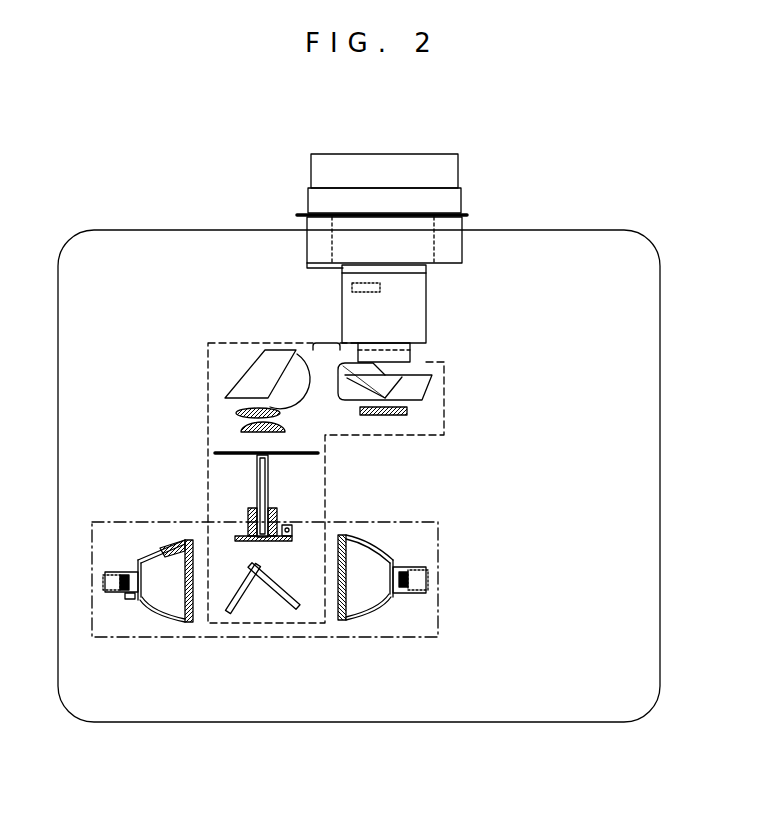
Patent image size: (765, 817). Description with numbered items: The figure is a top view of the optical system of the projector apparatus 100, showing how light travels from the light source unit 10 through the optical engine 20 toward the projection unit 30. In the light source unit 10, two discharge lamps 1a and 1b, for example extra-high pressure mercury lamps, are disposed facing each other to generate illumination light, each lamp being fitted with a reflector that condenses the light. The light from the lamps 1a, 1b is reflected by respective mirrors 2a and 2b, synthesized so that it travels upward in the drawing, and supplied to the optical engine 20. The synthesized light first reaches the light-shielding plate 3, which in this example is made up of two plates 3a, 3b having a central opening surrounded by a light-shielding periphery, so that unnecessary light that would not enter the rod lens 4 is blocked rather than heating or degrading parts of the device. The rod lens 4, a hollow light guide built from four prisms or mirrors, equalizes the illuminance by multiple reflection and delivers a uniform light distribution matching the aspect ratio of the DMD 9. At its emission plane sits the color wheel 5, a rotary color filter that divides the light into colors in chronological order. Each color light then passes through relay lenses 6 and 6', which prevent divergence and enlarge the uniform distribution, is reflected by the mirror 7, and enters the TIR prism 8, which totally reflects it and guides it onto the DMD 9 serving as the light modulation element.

The image display device 100 is at (151, 171).
The camera / projection lens unit 30 is at (462, 197).
The optical engine 20 is at (446, 403).
The light source unit 10 is at (440, 596).
The mirror 7 is at (243, 367).
The relay lens 6' is at (282, 340).
The relay lens 6 is at (212, 401).
The TIR prism 8 is at (433, 380).
The digital mirror device (DMD) 9 is at (392, 415).
The color wheel 5 is at (316, 451).
The rod lens 4 is at (270, 475).
The light-shielding plate 3 is at (197, 503).
The first element of 3 3a is at (252, 522).
The second element of 3 3b is at (272, 522).
The mirror 2a is at (294, 608).
The mirror 2b is at (236, 612).
The discharge lamp 1a is at (372, 615).
The discharge lamp 1b is at (146, 603).